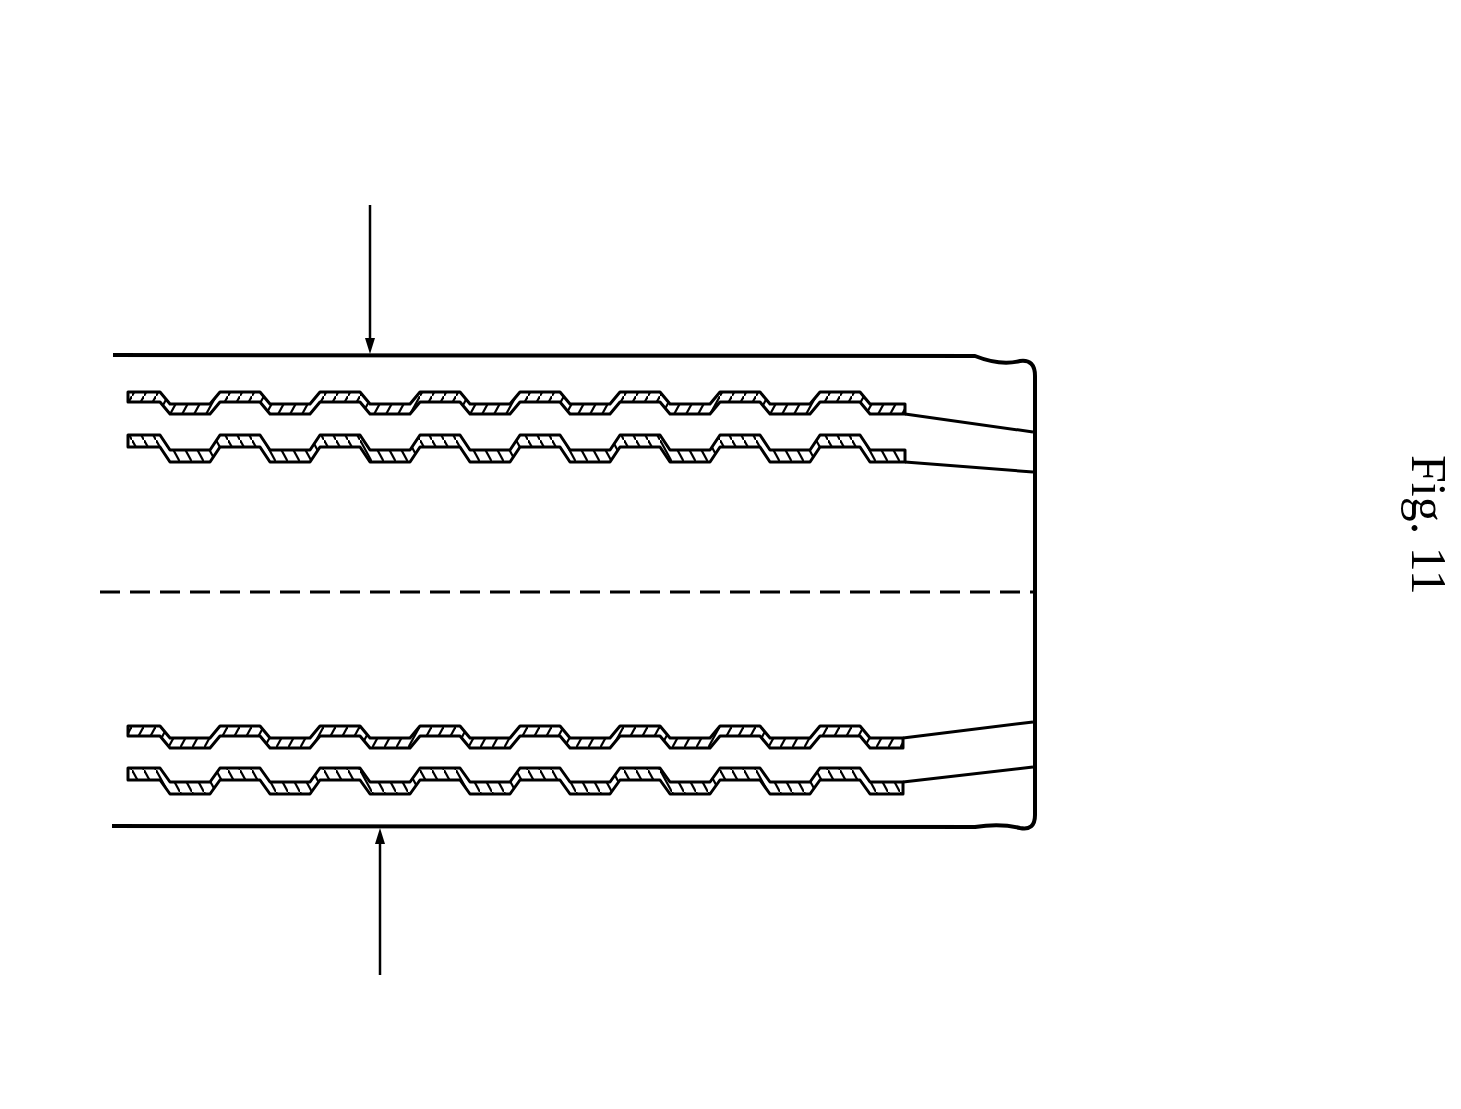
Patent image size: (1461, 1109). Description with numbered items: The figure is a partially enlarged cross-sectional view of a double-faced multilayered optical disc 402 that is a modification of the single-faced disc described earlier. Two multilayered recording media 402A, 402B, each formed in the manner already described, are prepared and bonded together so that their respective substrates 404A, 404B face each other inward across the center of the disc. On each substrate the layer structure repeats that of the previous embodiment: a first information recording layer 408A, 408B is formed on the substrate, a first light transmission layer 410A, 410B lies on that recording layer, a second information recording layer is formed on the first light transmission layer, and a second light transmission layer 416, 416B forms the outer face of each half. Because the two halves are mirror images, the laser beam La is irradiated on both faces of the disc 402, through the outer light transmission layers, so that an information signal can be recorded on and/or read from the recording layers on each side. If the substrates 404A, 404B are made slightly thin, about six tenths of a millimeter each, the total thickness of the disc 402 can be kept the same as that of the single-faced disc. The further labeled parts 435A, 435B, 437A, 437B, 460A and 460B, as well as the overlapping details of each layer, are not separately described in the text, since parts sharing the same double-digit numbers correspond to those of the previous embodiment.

The double-faced multilayered optical disc 402 is at (939, 164).
The multilayered recording medium 402A is at (999, 301).
The multilayered recording medium 402B is at (990, 873).
The substrate 404A is at (1016, 517).
The substrate 404B is at (1015, 680).
The first information recording layer 408A is at (736, 428).
The first information recording layer 408B is at (742, 756).
The first light transmission layer 410A is at (1020, 447).
The first light transmission layer 410B is at (1015, 745).
The second light transmission layer 416 is at (1005, 393).
The second light transmission layer 416B is at (658, 828).
The upper separator sheet 435A is at (995, 462).
The lower separator sheet 435B is at (975, 766).
The upper separator sheet 437A is at (972, 420).
The lower separator sheet 437B is at (955, 731).
The upper end wall 460A is at (1030, 353).
The lower end wall 460B is at (1015, 833).
The laser beam La is at (370, 228).